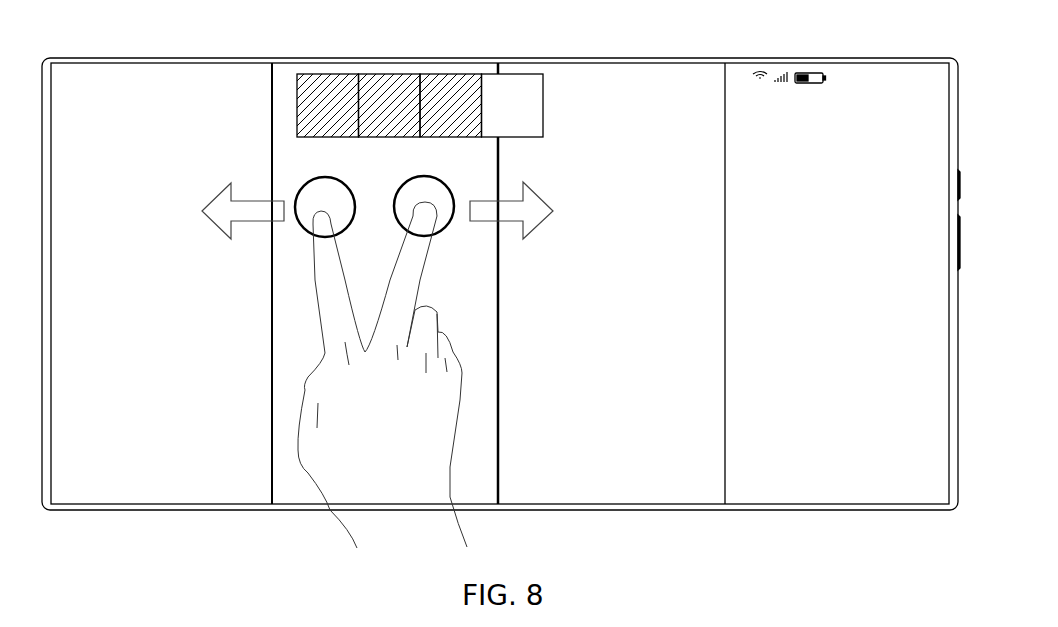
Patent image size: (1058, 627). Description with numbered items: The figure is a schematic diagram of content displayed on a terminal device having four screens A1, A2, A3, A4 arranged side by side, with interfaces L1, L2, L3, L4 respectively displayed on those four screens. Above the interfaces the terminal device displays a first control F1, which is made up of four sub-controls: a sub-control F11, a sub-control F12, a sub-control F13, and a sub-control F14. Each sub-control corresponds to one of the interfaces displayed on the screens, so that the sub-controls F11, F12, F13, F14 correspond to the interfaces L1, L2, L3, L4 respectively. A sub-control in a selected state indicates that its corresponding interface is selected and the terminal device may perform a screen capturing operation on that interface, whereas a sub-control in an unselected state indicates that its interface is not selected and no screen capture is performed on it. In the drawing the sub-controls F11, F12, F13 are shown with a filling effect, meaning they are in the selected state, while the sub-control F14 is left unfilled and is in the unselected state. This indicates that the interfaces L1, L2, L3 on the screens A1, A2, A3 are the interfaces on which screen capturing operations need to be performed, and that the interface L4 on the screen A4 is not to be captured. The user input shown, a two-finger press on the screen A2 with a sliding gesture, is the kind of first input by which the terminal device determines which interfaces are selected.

The screen A1 is at (171, 58).
The screen A2 is at (368, 58).
The screen A3 is at (577, 58).
The screen A4 is at (813, 58).
The first control F1 is at (423, 102).
The sub-control F11 is at (337, 123).
The sub-control F12 is at (399, 123).
The sub-control F13 is at (461, 123).
The sub-control F14 is at (522, 122).
The interface L1 is at (161, 283).
The interface L2 is at (385, 283).
The interface L3 is at (611, 283).
The interface L4 is at (837, 283).